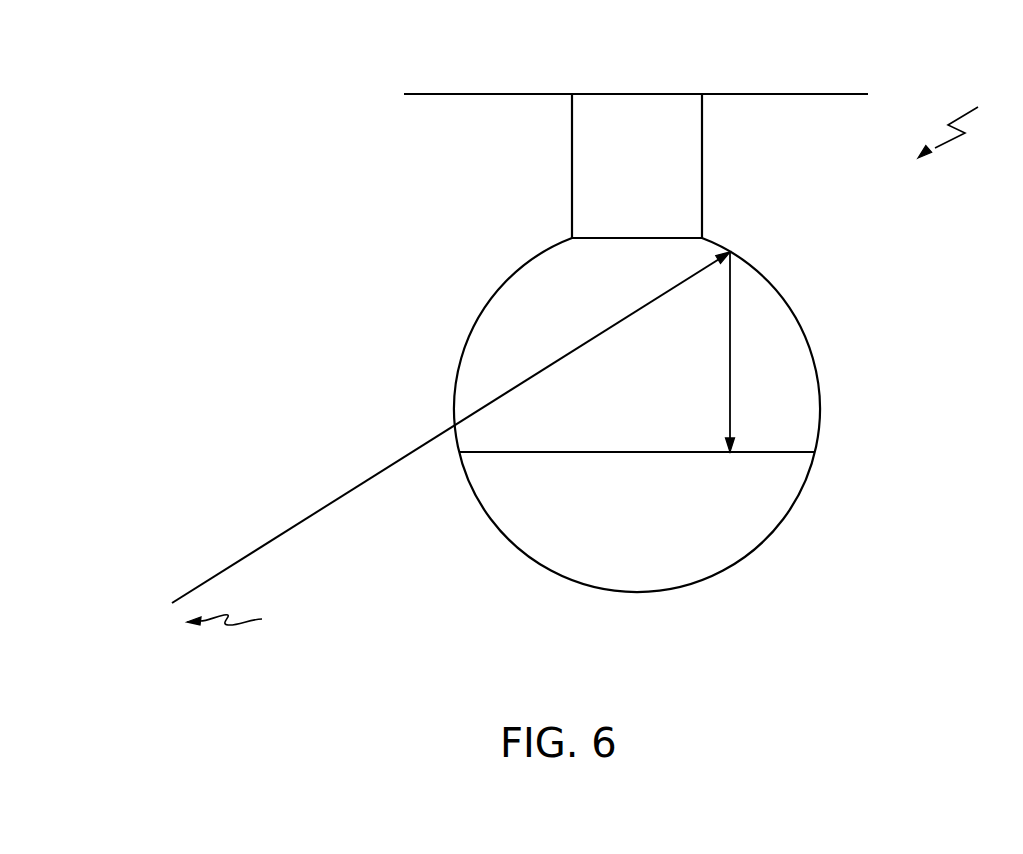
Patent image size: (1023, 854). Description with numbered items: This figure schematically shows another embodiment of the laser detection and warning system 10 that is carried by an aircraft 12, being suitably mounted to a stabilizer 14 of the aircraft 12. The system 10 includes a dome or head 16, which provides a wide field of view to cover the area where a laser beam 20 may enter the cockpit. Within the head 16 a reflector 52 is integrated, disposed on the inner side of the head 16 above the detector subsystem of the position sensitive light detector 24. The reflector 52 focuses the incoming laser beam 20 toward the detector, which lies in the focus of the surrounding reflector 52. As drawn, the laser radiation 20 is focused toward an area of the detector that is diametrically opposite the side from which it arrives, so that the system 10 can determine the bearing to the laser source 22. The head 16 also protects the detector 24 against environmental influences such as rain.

The laser detection and warning system 10 is at (965, 123).
The aircraft 12 is at (817, 94).
The stabilizer 14 is at (702, 172).
The head 16 is at (767, 538).
The laser beam 20 is at (357, 486).
The laser source 22 is at (245, 621).
The position sensitive light detector 24 is at (636, 454).
The reflector 52 is at (810, 352).